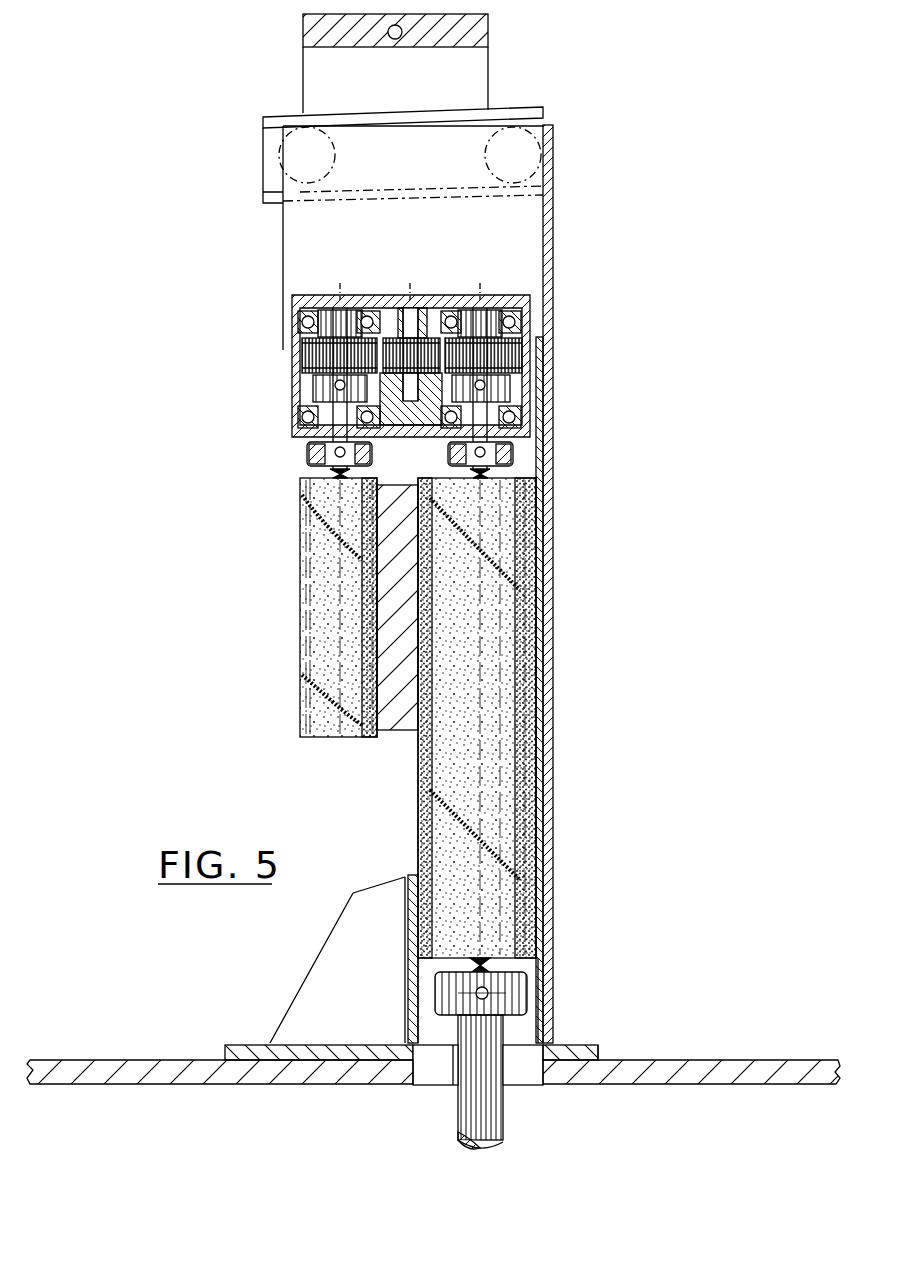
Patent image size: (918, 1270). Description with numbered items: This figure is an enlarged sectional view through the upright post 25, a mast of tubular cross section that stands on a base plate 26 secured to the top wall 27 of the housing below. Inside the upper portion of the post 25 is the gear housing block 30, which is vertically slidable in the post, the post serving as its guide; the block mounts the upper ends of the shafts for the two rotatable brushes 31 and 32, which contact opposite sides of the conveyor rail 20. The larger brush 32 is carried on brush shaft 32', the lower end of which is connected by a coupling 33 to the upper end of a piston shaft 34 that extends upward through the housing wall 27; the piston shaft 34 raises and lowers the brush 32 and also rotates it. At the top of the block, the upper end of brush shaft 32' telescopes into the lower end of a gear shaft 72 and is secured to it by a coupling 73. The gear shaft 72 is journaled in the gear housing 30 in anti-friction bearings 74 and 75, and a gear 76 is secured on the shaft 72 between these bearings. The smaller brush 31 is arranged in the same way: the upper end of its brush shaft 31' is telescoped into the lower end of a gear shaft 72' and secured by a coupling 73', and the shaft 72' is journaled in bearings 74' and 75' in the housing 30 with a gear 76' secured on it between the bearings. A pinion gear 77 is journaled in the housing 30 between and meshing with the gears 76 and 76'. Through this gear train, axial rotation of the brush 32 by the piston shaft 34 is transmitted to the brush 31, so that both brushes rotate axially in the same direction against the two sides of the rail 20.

The conveyor rail 20 is at (396, 717).
The upright post 25 is at (575, 597).
The base plate 26 is at (585, 1055).
The top wall 27 is at (733, 1072).
The gear housing block 30 is at (383, 305).
The brush 31 is at (248, 607).
The brush shaft 31' is at (232, 487).
The brush 32 is at (551, 718).
The brush shaft 32' is at (579, 704).
The coupling 33 is at (507, 988).
The piston shaft 34 is at (488, 1108).
The gear shaft 72 is at (556, 333).
The gear shaft 72' is at (229, 339).
The coupling 73 is at (564, 427).
The coupling 73' is at (241, 447).
The anti-friction bearing 74 is at (536, 302).
The bearing 74' is at (239, 295).
The anti-friction bearing 75 is at (540, 398).
The bearing 75' is at (244, 408).
The gear 76 is at (526, 367).
The gear 76' is at (242, 367).
The pinion gear 77 is at (408, 310).